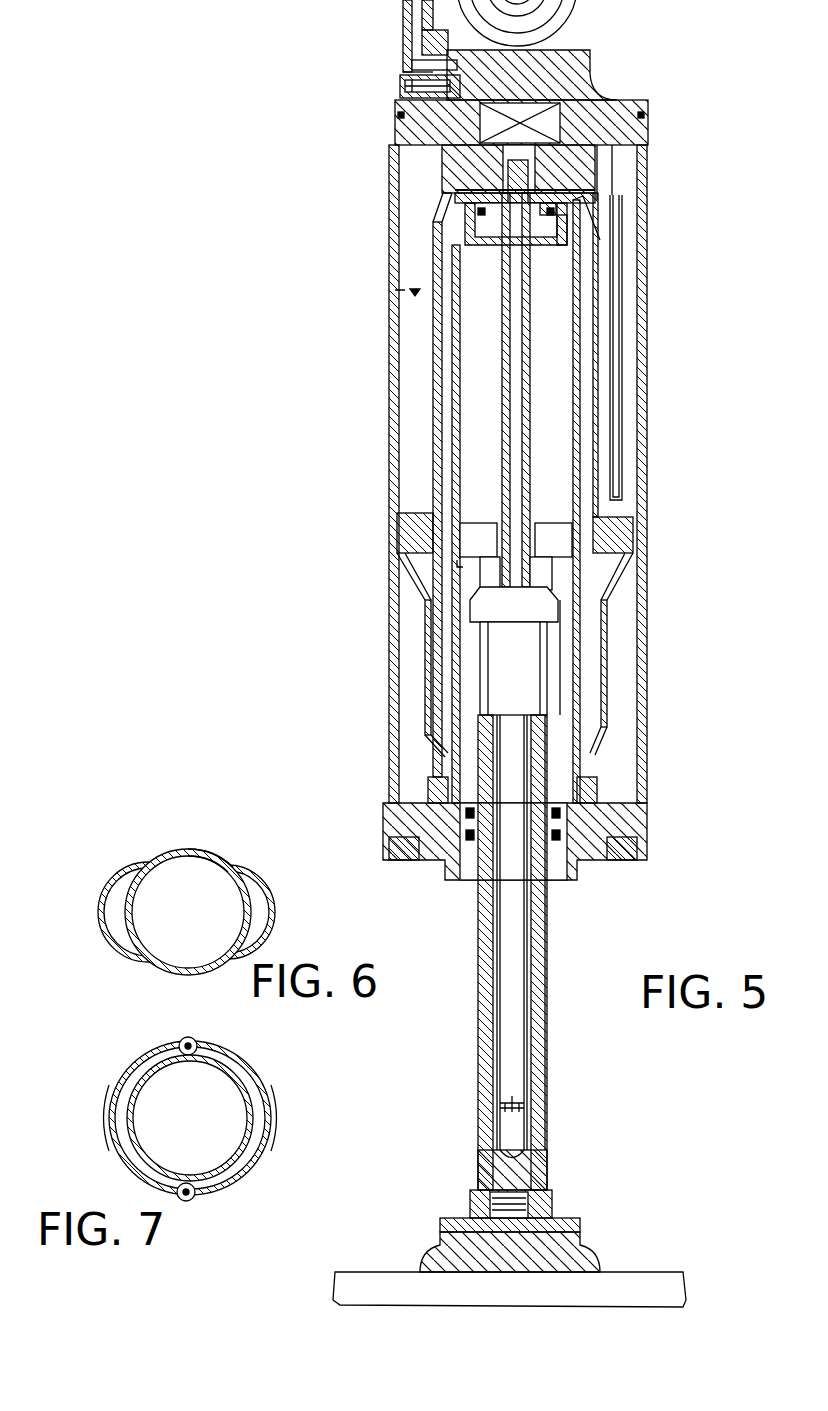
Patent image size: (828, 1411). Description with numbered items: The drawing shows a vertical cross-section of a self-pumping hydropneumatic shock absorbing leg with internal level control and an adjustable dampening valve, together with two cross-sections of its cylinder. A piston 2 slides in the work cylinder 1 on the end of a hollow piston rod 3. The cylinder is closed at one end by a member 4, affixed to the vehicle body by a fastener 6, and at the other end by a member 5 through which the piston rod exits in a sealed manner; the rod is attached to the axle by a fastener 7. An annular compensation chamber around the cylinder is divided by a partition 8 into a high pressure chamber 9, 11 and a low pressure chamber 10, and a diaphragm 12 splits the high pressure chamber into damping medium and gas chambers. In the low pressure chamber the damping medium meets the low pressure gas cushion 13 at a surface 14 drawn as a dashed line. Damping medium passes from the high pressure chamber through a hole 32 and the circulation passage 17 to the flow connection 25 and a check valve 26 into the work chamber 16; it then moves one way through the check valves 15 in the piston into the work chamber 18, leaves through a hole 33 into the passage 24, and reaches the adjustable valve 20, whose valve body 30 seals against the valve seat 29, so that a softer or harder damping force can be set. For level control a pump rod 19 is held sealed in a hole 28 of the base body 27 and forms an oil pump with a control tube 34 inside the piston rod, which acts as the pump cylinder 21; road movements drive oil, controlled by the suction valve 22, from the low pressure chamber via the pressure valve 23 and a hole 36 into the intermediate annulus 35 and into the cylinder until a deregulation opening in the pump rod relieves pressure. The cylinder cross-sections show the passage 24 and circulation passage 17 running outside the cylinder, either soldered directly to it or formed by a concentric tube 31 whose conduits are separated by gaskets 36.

In FIG. 5, the work cylinder 1 is at (577, 396).
In FIG. 6, the work cylinder 1 is at (160, 855).
In FIG. 7, the work cylinder 1 is at (130, 1160).
In FIG. 5, the piston 2 is at (457, 566).
In FIG. 5, the piston rod 3 is at (500, 683).
In FIG. 5, the member 4 is at (530, 65).
In FIG. 5, the member 5 is at (580, 828).
In FIG. 5, the fastener 6 is at (585, 4).
In FIG. 5, the fastener 7 is at (610, 1258).
In FIG. 5, the partition 8 is at (630, 500).
In FIG. 5, the high pressure chamber 9 is at (622, 706).
In FIG. 5, the low pressure chamber 10 is at (398, 327).
In FIG. 5, the high pressure chamber 11 is at (598, 757).
In FIG. 5, the diaphragm 12 is at (610, 624).
In FIG. 5, the low pressure gas cushion 13 is at (423, 184).
In FIG. 5, the surface 14 is at (395, 290).
In FIG. 5, the check valves 15 is at (442, 573).
In FIG. 5, the work chamber 16 is at (480, 375).
In FIG. 6, the work chamber 16 is at (205, 860).
In FIG. 5, the circulation passage 17 is at (583, 662).
In FIG. 6, the circulation passage 17 is at (262, 898).
In FIG. 7, the circulation passage 17 is at (262, 1120).
In FIG. 5, the work chamber 18 is at (563, 680).
In FIG. 6, the work chamber 18 is at (205, 860).
In FIG. 5, the pump rod 19 is at (528, 362).
In FIG. 5, the adjustable valve 20 is at (548, 158).
In FIG. 5, the pump cylinder 21 is at (510, 965).
In FIG. 5, the suction valve 22 is at (552, 850).
In FIG. 5, the pressure valve 23 is at (510, 1128).
In FIG. 5, the passage 24 is at (440, 617).
In FIG. 6, the passage 24 is at (112, 900).
In FIG. 7, the passage 24 is at (113, 1118).
In FIG. 5, the flow connection 25 is at (545, 195).
In FIG. 5, the check valve 26 is at (583, 237).
In FIG. 5, the base body 27 is at (445, 205).
In FIG. 5, the hole 28 is at (470, 233).
In FIG. 5, the valve seat 29 is at (545, 190).
In FIG. 5, the valve body 30 is at (505, 172).
In FIG. 5, the tube 31 is at (616, 441).
In FIG. 7, the tube 31 is at (135, 1072).
In FIG. 5, the hole 32 is at (597, 575).
In FIG. 5, the hole 33 is at (448, 728).
In FIG. 5, the control tube 34 is at (528, 980).
In FIG. 5, the intermediate chamber 35 is at (540, 1008).
In FIG. 7, the hole 36 is at (183, 1040).